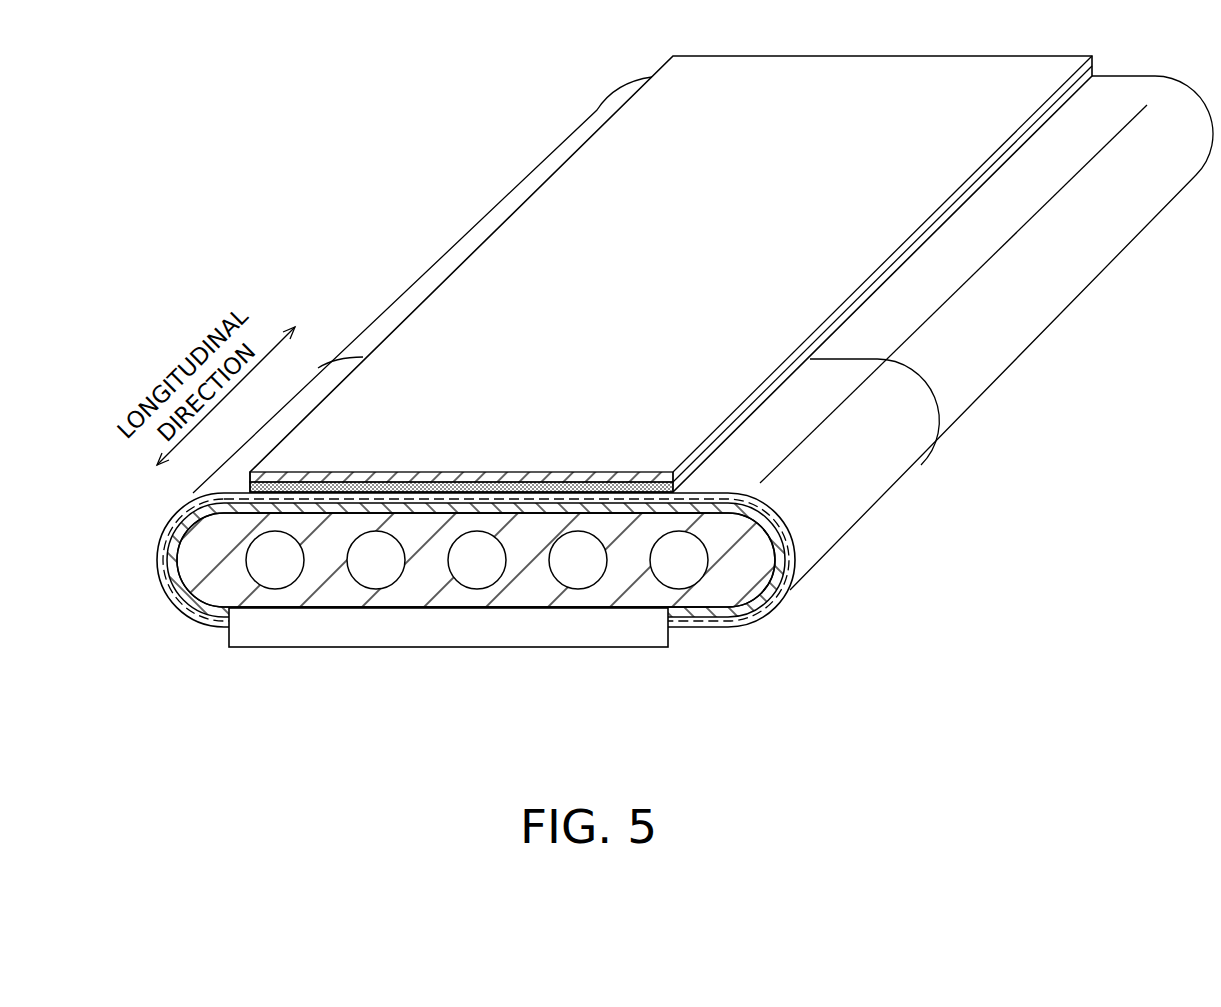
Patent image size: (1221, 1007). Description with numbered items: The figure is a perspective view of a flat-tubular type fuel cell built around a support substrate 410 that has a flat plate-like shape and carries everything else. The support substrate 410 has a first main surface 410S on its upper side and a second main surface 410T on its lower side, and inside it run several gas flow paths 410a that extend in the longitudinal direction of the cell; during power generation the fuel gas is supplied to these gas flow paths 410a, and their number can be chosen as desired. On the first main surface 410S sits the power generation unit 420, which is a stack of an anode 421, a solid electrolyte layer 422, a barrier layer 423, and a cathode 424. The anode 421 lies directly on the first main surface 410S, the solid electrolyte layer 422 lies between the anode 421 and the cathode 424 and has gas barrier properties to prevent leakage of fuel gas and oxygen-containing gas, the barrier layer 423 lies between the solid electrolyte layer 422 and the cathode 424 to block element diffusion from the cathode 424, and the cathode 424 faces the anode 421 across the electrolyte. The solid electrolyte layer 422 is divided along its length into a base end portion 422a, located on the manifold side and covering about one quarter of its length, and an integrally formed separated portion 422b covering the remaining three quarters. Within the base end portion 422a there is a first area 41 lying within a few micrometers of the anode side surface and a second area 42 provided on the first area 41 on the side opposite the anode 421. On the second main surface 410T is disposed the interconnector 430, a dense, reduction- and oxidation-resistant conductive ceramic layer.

The first area 41 is at (793, 558).
The second area 42 is at (783, 602).
The support substrate 410 is at (476, 567).
The gas flow paths 410a is at (377, 573).
The first main surface 410S is at (634, 517).
The second main surface 410T is at (573, 612).
The power generation unit 420 is at (671, 274).
The anode 421 is at (388, 510).
The solid electrolyte layer 422 is at (986, 333).
The base end portion 422a is at (855, 487).
The separated portion 422b is at (937, 377).
The barrier layer 423 is at (532, 488).
The cathode 424 is at (481, 478).
The interconnector 430 is at (423, 637).